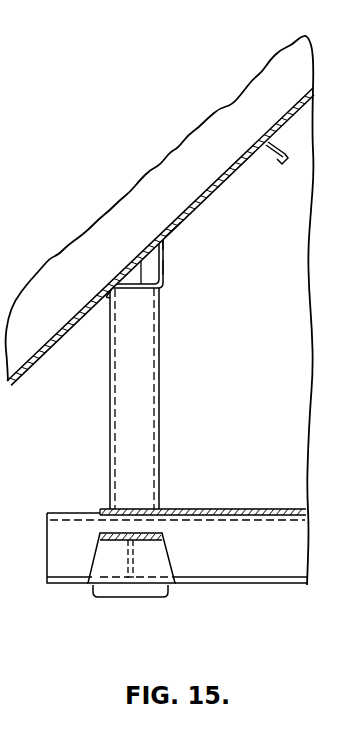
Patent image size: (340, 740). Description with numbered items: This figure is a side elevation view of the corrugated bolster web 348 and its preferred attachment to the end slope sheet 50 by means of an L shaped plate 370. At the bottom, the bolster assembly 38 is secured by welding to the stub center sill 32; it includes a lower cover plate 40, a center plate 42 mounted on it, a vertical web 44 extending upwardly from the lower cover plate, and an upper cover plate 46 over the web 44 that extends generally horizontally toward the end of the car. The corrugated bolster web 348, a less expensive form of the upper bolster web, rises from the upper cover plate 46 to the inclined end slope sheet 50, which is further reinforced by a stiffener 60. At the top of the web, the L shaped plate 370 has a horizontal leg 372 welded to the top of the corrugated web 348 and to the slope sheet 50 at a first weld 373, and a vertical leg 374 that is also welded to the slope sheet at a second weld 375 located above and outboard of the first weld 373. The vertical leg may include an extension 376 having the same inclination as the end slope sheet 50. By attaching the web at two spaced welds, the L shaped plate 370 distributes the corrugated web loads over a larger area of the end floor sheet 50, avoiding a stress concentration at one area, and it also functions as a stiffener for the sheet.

The stub center sill 32 is at (230, 574).
The bolster assembly 38 is at (112, 584).
The lower cover plate 40 is at (117, 570).
The center plate 42 is at (133, 597).
The vertical web 44 is at (136, 564).
The upper cover plate 46 is at (244, 511).
The end slope sheet 50 is at (226, 181).
The stiffener 60 is at (282, 164).
The corrugated bolster web 348 is at (168, 387).
The L shaped plate 370 is at (176, 285).
The horizontal leg 372 is at (138, 266).
The first weld 373 is at (100, 303).
The vertical leg 374 is at (170, 264).
The weld 375 is at (181, 226).
The extension 376 is at (170, 241).